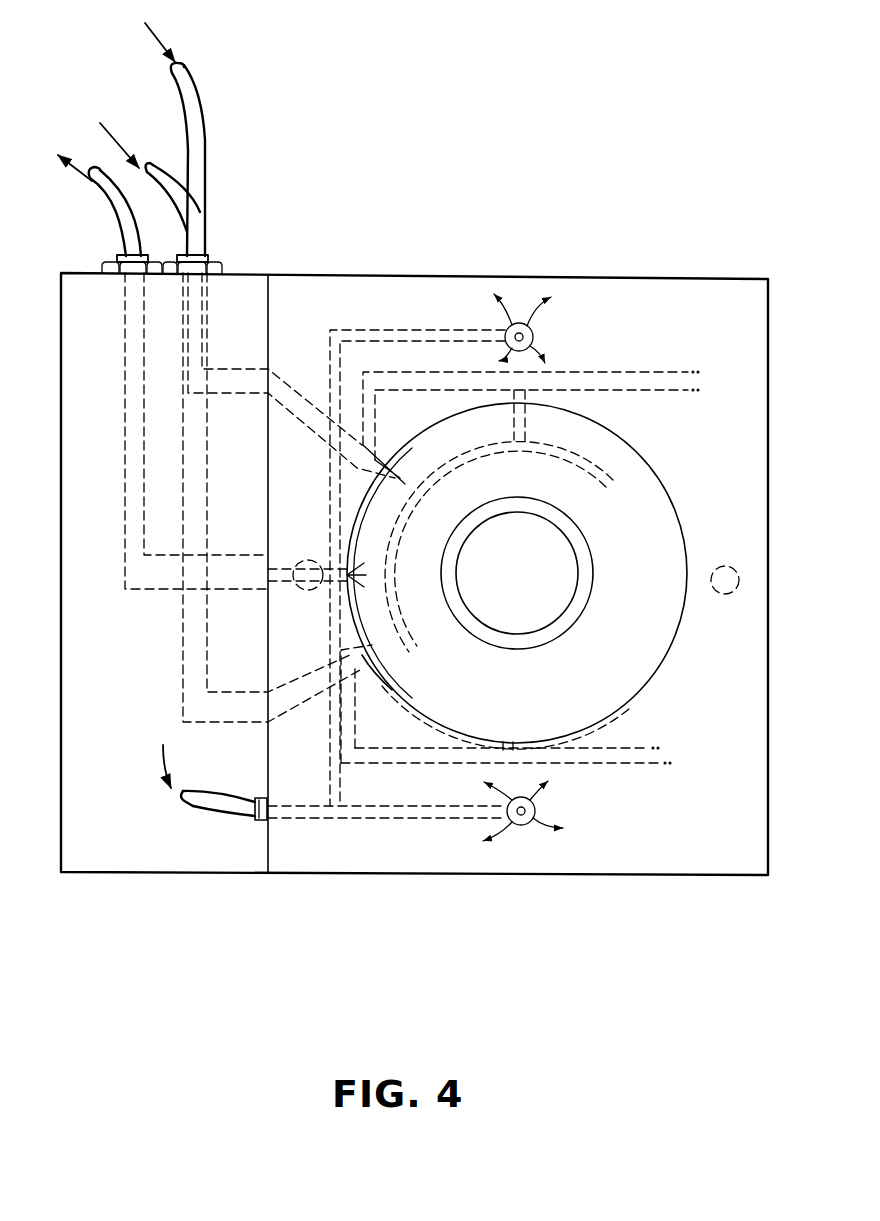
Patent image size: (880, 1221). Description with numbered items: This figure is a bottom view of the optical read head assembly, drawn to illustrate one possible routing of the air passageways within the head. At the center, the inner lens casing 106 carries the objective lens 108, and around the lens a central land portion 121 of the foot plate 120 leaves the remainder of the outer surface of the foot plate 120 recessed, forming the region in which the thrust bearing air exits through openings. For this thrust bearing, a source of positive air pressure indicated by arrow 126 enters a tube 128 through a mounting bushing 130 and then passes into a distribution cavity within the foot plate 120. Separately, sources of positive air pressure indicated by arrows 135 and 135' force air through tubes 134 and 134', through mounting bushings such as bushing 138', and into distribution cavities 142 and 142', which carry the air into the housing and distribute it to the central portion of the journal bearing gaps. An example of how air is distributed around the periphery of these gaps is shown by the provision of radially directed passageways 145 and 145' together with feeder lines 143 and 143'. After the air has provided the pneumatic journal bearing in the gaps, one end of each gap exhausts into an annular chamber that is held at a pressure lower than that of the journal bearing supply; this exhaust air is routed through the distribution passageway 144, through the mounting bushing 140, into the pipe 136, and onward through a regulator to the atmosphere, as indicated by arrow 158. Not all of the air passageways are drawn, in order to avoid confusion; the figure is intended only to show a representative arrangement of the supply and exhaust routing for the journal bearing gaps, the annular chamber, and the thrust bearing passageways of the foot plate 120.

The inner lens casing 106 is at (590, 585).
The objective lens 108 is at (560, 613).
The foot plate 120 is at (688, 288).
The central land portion 121 is at (650, 483).
The positive air pressure source arrow 126 is at (163, 752).
The tube 128 is at (195, 803).
The mounting bushing 130 is at (255, 822).
The tube 134 is at (217, 192).
The tube 134' is at (233, 159).
The positive air pressure source arrow 135 is at (128, 122).
The positive air pressure source arrow 135' is at (200, 35).
The pipe 136 is at (100, 193).
The mounting bushing 138' is at (238, 242).
The mounting bushing 140 is at (108, 263).
The distribution cavity 142 is at (291, 375).
The distribution cavity 142' is at (224, 497).
The feeder line 143 is at (531, 413).
The feeder line 143' is at (506, 722).
The distribution passageway 144 is at (133, 427).
The radially directed passageway 145 is at (457, 415).
The radially directed passageway 145' is at (437, 702).
The exhaust arrow 158 is at (82, 170).